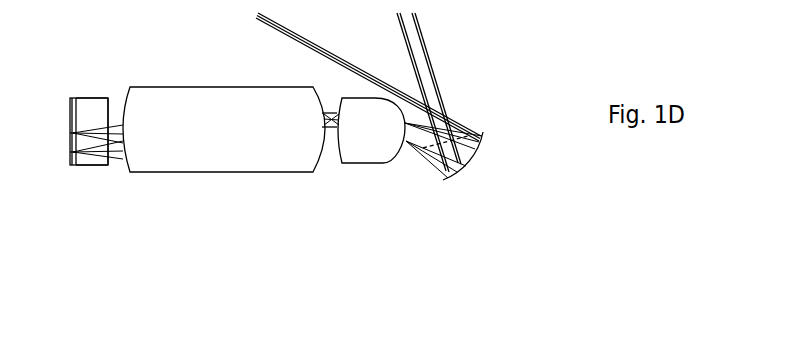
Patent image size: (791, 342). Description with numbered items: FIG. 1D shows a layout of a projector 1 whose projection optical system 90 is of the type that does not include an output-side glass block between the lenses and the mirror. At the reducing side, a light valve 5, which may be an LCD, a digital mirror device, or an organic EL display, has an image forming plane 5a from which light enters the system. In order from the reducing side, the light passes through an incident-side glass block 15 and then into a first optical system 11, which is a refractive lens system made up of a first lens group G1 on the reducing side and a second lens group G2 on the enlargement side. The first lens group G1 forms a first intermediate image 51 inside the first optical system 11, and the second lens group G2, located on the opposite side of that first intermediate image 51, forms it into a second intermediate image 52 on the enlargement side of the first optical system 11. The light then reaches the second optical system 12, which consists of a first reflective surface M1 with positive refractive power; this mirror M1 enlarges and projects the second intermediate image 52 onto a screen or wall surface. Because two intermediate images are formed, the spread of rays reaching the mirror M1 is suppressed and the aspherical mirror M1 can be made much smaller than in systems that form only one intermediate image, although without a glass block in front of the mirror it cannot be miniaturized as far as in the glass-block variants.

The projector 1 is at (461, 70).
The projection optical system 90 is at (112, 220).
The light valve 5 is at (69, 127).
The image forming plane 5a is at (77, 158).
The incident-side glass block 15 is at (98, 158).
The first optical system 11 is at (222, 207).
The first lens group G1 is at (252, 145).
The second lens group G2 is at (365, 145).
The first intermediate image 51 is at (333, 110).
The second intermediate image 52 is at (468, 125).
The second optical system 12 is at (425, 205).
The first reflective surface M1 is at (472, 157).